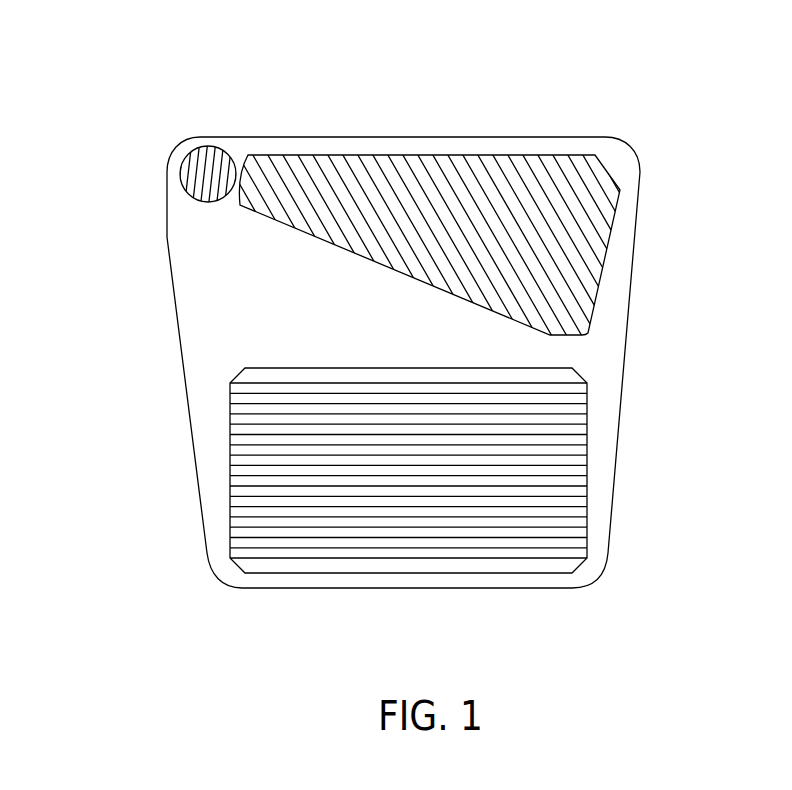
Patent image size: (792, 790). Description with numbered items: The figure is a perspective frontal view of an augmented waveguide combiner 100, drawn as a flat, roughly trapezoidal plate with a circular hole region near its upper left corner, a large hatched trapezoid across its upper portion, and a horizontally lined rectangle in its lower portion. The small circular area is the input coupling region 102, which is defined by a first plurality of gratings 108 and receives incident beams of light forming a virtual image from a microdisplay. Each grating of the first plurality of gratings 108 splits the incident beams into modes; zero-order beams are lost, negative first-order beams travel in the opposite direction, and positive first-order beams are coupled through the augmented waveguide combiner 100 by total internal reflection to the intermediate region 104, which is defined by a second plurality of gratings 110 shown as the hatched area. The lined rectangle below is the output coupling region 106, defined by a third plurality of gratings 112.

The augmented waveguide combiner 100 is at (252, 293).
The input coupling region 102 is at (208, 126).
The intermediate region 104 is at (476, 142).
The output coupling region 106 is at (600, 424).
The first plurality of gratings 108 is at (228, 157).
The second plurality of gratings 110 is at (582, 207).
The third plurality of gratings 112 is at (562, 463).